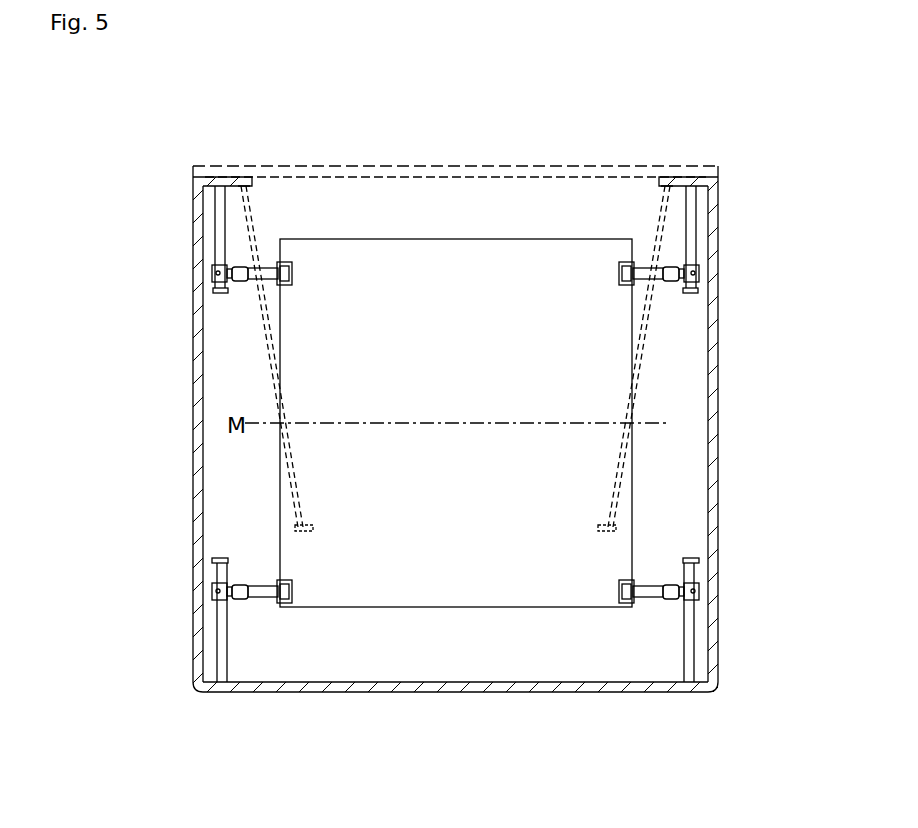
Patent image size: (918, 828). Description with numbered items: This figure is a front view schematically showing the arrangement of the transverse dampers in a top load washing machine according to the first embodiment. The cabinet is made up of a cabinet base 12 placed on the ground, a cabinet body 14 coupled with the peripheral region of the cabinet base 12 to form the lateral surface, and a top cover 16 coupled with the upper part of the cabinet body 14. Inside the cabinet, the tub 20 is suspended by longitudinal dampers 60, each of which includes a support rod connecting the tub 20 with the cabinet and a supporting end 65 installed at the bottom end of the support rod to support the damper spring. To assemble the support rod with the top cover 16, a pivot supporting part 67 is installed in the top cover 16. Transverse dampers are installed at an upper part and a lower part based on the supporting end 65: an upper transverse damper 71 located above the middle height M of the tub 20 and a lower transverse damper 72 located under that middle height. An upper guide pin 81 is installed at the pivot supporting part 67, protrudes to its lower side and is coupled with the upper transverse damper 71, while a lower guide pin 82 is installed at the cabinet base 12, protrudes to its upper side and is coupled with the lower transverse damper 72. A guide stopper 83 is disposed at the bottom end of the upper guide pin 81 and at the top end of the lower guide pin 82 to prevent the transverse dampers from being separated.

The cabinet base 12 is at (627, 692).
The cabinet body 14 is at (715, 445).
The top cover 16 is at (515, 166).
The tub 20 is at (634, 478).
The longitudinal damper 60 is at (282, 340).
The supporting end 65 is at (313, 530).
The pivot supporting part 67 is at (235, 183).
The upper transverse damper 71 is at (244, 286).
The lower transverse damper 72 is at (242, 578).
The upper guide pin 81 is at (218, 233).
The lower guide pin 82 is at (218, 638).
The guide stopper 83 is at (215, 296).